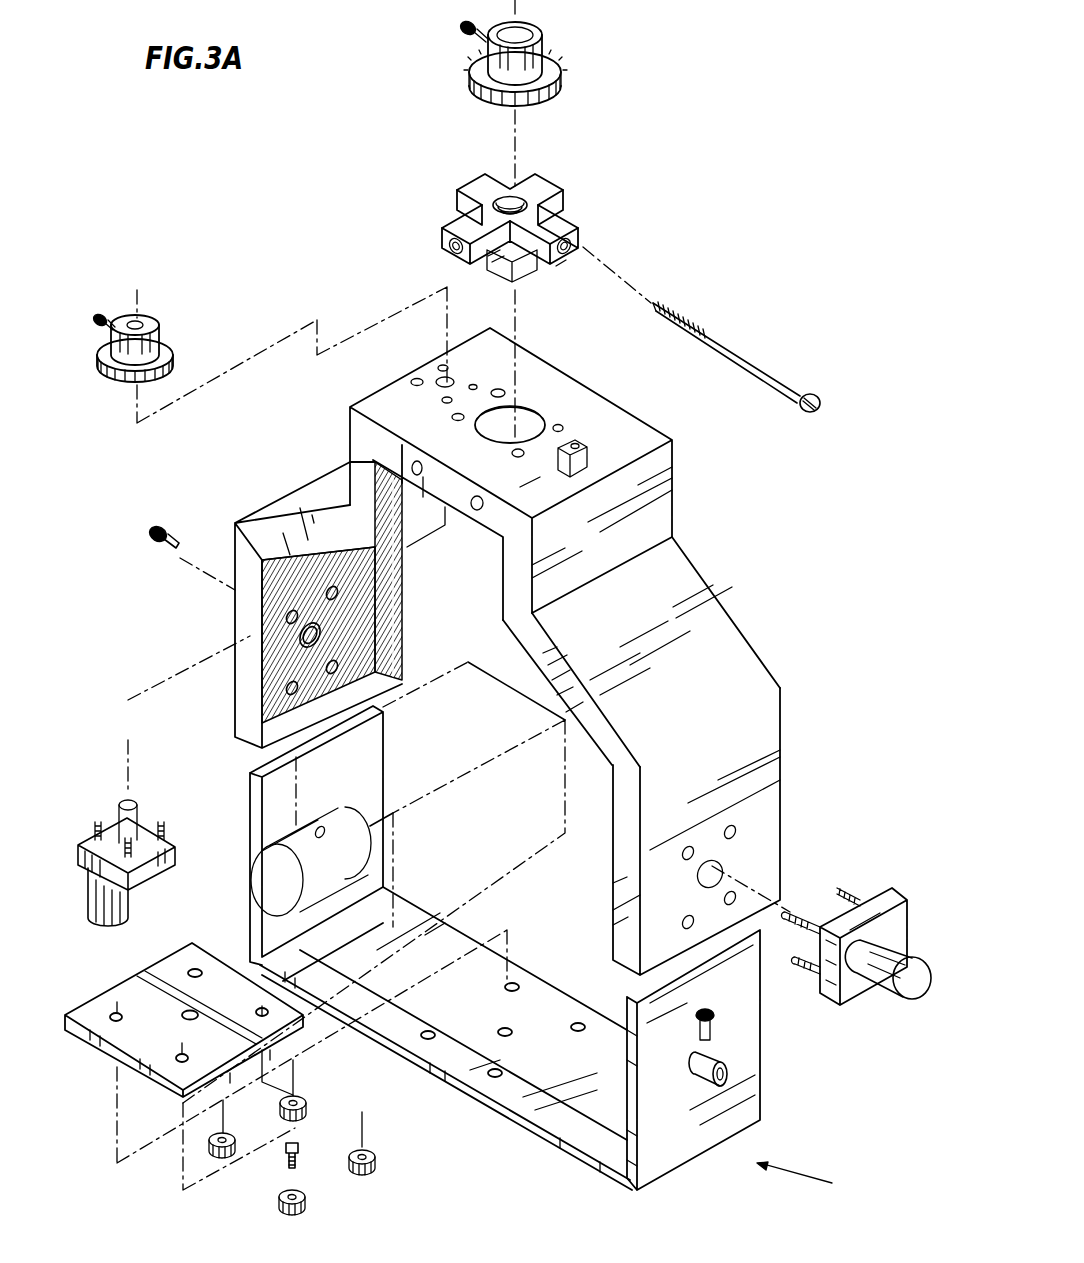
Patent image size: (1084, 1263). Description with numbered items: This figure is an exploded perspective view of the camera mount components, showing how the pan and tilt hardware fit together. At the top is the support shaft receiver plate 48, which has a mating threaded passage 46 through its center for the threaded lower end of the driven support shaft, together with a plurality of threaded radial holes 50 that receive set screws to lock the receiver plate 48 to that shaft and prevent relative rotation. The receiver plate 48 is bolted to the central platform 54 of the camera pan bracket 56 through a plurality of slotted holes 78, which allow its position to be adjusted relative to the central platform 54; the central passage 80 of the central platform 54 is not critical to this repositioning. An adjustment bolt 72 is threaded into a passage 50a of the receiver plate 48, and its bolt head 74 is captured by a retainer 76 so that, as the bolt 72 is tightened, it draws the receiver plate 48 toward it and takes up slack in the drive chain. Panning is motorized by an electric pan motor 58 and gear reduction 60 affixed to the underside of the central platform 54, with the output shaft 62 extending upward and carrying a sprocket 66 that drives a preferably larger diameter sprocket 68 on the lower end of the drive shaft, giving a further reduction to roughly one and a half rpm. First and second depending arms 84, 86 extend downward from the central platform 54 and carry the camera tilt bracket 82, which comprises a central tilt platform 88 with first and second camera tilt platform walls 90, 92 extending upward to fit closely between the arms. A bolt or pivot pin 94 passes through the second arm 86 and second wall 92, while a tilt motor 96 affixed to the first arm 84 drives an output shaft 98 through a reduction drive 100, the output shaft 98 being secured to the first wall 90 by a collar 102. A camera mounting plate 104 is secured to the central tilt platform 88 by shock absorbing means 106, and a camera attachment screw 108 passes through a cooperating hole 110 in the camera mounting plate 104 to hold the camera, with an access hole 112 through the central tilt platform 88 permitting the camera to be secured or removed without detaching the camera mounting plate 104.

The threaded passage 46 is at (510, 183).
The support shaft receiver plate 48 is at (515, 259).
The threaded radial holes 50 is at (448, 258).
The passage 50a is at (553, 264).
The central platform 54 is at (533, 474).
The camera pan bracket 56 is at (746, 594).
The electric pan motor 58 is at (130, 906).
The gear reduction 60 is at (178, 856).
The output shaft 62 is at (191, 799).
The sprocket 66 is at (166, 332).
The sprocket 68 is at (566, 78).
The adjustment bolt 72 is at (768, 360).
The bolt head 74 is at (824, 403).
The retainer 76 is at (577, 440).
The slotted holes 78 is at (442, 222).
The central passage 80 is at (490, 432).
The camera tilt bracket 82 is at (815, 1181).
The first depending arm 84 is at (782, 786).
The second depending arm 86 is at (238, 610).
The central tilt platform 88 is at (446, 1038).
The first camera tilt platform wall 90 is at (730, 1060).
The second camera tilt platform wall 92 is at (252, 776).
The pivot pin 94 is at (170, 530).
The tilt motor 96 is at (906, 999).
The output shaft 98 is at (796, 895).
The reduction drive 100 is at (857, 932).
The collar 102 is at (738, 1076).
The camera mounting plate 104 is at (184, 1017).
The shock absorbing means 106 is at (282, 1186).
The camera attachment screw 108 is at (298, 1160).
The hole 110 is at (190, 1012).
The access hole 112 is at (512, 1036).